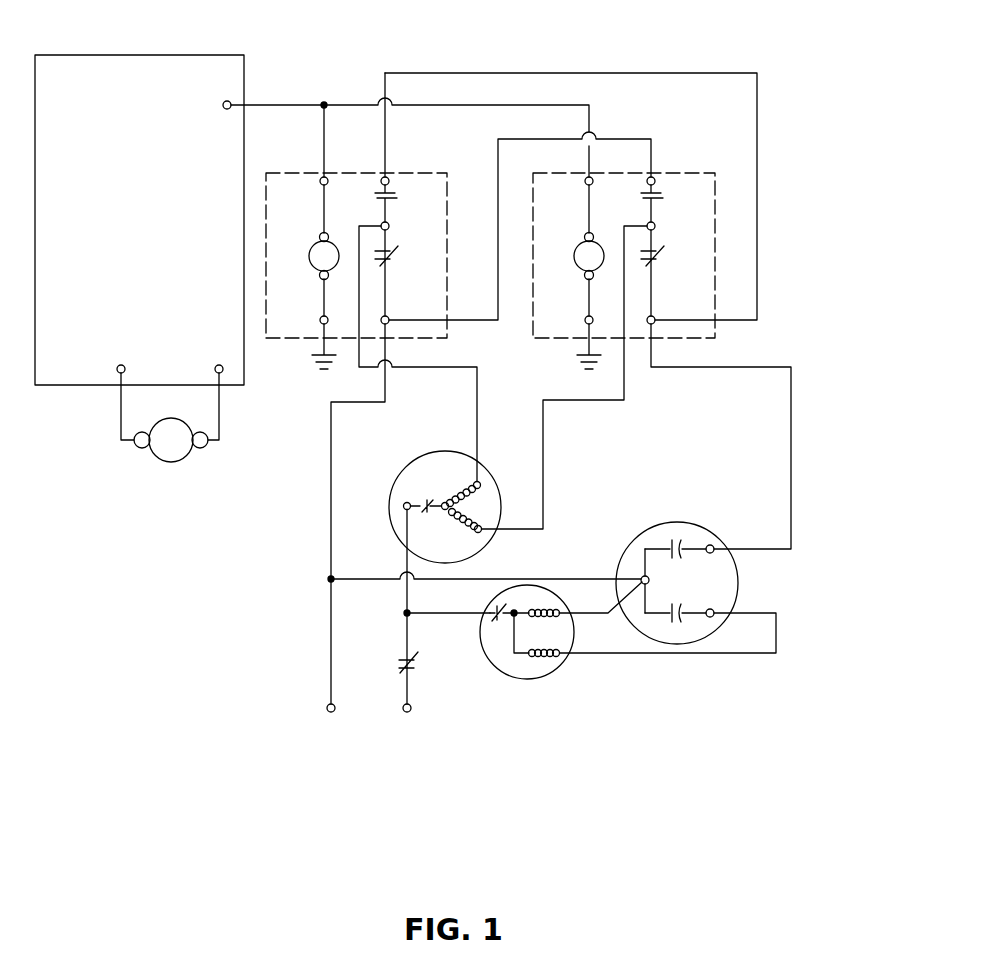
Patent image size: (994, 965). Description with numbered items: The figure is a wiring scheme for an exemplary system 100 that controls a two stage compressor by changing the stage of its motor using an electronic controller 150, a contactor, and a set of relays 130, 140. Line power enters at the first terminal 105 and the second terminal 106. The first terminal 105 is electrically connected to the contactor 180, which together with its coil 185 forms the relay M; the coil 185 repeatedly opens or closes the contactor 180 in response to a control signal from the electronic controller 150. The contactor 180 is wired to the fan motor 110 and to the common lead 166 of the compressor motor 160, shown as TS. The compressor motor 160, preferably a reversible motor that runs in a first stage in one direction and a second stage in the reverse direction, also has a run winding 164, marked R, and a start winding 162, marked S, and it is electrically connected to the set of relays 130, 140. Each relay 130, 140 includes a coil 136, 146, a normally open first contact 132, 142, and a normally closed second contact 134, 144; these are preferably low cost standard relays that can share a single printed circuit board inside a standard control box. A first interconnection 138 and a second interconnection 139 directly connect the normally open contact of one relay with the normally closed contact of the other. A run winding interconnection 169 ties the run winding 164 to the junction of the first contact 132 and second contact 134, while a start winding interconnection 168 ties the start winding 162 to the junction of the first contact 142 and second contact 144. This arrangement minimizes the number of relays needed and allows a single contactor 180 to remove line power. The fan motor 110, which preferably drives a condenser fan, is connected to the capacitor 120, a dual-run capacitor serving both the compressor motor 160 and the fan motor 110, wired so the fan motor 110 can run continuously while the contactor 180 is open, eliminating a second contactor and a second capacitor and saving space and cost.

The system 100 is at (843, 863).
The first terminal 105 is at (411, 708).
The second terminal 106 is at (327, 708).
The fan motor 110 is at (560, 660).
The capacitor 120 is at (682, 524).
The relay 130 is at (715, 180).
The first contact 132 is at (662, 195).
The second contact 134 is at (658, 256).
The coil 136 is at (593, 237).
The first interconnection 138 is at (634, 73).
The second interconnection 139 is at (498, 324).
The relay 140 is at (444, 175).
The first contact 142 is at (396, 195).
The second contact 144 is at (392, 256).
The coil 146 is at (328, 237).
The electronic controller 150 is at (244, 55).
The compressor motor 160 is at (416, 464).
The start winding 162 is at (485, 488).
The run winding 164 is at (499, 527).
The common lead 166 is at (414, 502).
The start winding interconnection 168 is at (359, 370).
The run winding interconnection 169 is at (597, 402).
The contactor 180 is at (398, 657).
The coil 185 is at (174, 462).